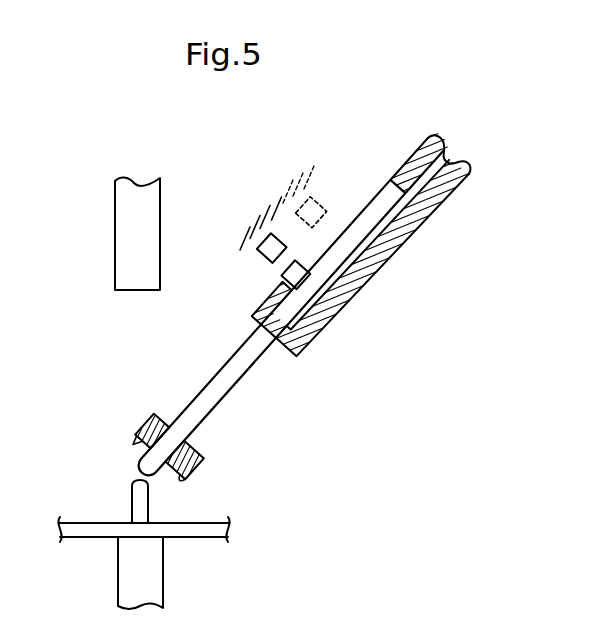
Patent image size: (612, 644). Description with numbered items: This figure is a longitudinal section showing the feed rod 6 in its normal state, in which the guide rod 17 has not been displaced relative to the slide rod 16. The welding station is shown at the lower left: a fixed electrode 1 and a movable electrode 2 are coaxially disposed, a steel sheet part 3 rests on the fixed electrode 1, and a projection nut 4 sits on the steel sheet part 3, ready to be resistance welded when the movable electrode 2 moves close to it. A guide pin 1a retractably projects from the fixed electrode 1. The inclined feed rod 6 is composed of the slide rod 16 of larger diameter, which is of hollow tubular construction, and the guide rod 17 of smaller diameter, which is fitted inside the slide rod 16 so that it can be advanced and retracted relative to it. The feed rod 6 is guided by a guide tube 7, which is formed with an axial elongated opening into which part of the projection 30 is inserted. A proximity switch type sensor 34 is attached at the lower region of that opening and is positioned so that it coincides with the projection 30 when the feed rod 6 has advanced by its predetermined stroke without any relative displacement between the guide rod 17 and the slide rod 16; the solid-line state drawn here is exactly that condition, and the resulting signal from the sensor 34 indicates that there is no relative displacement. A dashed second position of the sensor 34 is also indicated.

The fixed electrode 1 is at (165, 590).
The guide pin 1a is at (137, 482).
The movable electrode 2 is at (115, 246).
The steel sheet part 3 is at (85, 524).
The projection nut 4 is at (197, 477).
The feed rod 6 is at (398, 272).
The guide tube 7 is at (250, 274).
The slide rod 16 is at (345, 298).
The guide rod 17 is at (206, 386).
The projection 30 is at (281, 277).
The sensor 34 is at (287, 246).